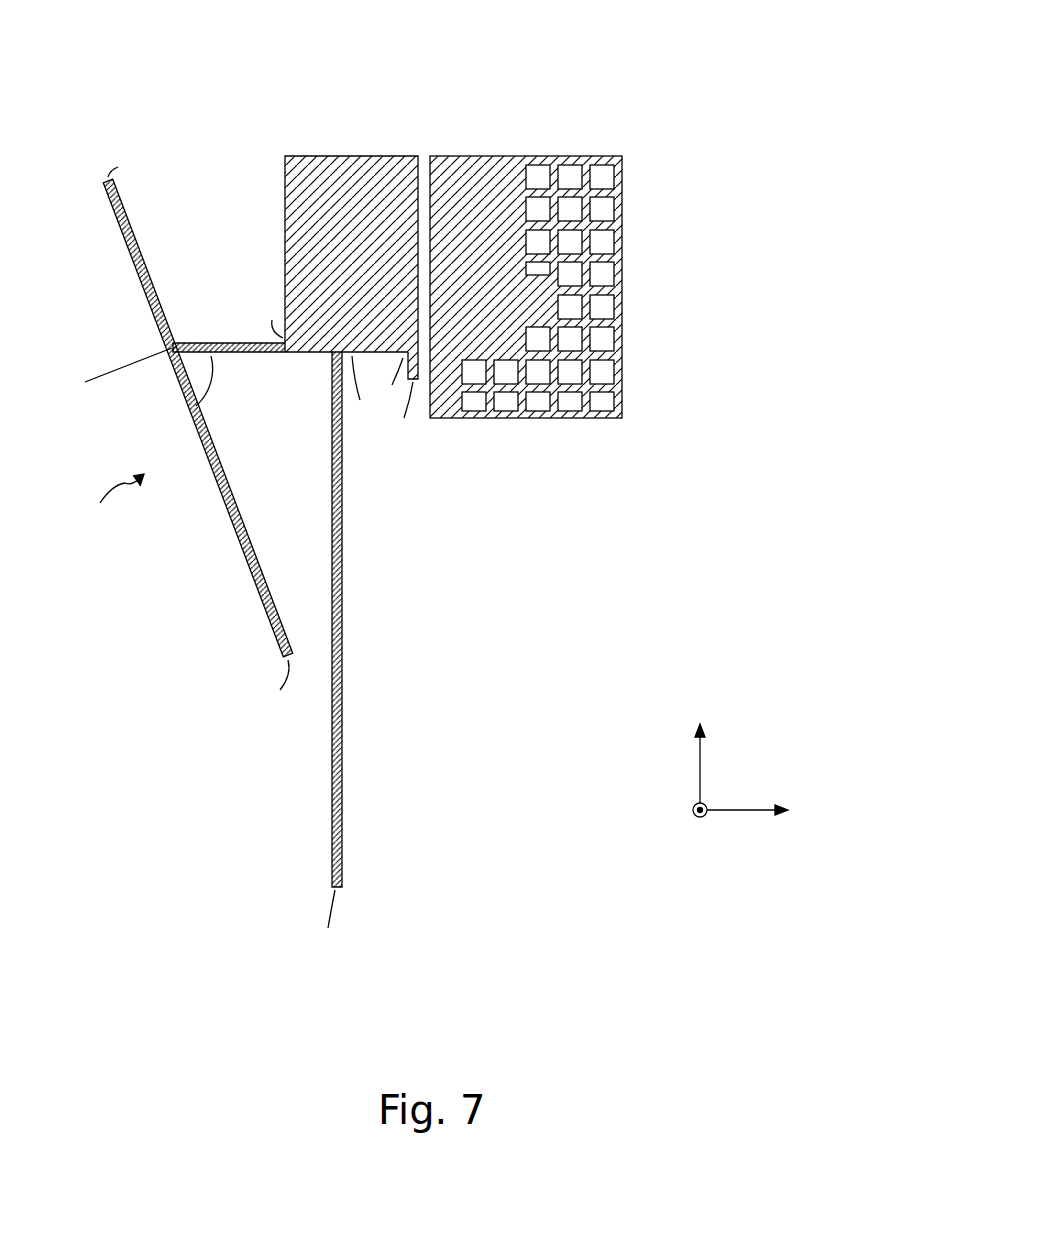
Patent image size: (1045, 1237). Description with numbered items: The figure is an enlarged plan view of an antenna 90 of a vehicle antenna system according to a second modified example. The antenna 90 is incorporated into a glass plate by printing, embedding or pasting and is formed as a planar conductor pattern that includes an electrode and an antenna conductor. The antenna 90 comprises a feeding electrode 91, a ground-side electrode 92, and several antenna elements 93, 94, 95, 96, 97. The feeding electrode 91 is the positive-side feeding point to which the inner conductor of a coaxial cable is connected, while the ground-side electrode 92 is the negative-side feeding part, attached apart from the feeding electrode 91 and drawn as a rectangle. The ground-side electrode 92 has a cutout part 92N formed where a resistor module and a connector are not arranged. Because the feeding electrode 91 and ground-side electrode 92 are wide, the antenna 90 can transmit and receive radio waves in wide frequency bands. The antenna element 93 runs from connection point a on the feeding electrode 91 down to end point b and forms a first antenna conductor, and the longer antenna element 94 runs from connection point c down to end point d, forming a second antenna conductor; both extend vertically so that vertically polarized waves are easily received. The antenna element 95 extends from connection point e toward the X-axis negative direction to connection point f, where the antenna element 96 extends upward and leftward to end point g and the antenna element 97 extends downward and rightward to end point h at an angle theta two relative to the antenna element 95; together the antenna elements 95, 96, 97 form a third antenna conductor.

The antenna 90 is at (648, 70).
The feeding electrode 91 is at (356, 156).
The ground-side electrode 92 is at (526, 258).
The cutout part 92N is at (575, 156).
The antenna element 93 is at (412, 380).
The antenna element 94 is at (387, 619).
The antenna element 95 is at (228, 342).
The antenna element 96 is at (138, 224).
The antenna element 97 is at (248, 508).